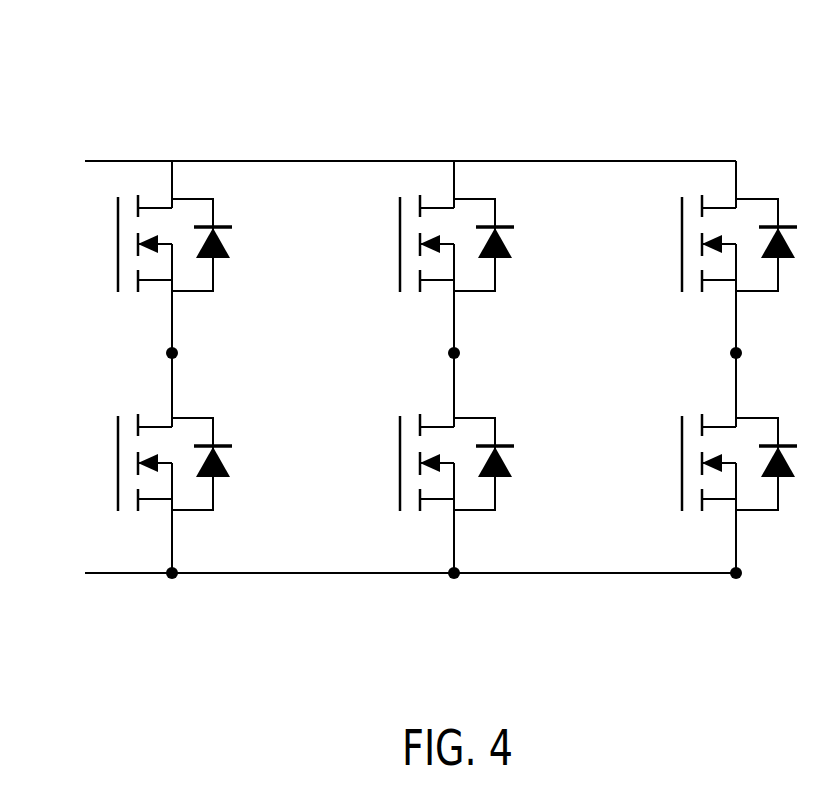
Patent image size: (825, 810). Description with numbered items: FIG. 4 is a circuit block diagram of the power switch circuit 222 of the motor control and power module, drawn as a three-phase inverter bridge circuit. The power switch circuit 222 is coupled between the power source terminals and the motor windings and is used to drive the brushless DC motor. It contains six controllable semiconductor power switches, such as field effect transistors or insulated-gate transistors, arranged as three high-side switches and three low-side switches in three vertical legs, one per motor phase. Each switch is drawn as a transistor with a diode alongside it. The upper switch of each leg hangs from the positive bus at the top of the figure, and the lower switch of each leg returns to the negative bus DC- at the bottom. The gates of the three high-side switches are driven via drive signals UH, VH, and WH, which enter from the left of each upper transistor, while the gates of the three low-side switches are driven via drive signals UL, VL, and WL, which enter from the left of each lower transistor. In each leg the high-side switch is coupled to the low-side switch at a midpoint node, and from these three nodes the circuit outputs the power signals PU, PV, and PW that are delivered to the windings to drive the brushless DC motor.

The power switch circuit 222 is at (92, 44).
The high-side drive signal UH is at (132, 243).
The low-side drive signal UL is at (132, 462).
The high-side drive signal VH is at (413, 243).
The low-side drive signal VL is at (413, 462).
The high-side drive signal WH is at (691, 243).
The low-side drive signal WL is at (691, 462).
The power signal PU is at (122, 353).
The power signal PV is at (407, 353).
The power signal PW is at (687, 353).
The negative DC bus DC- is at (410, 592).